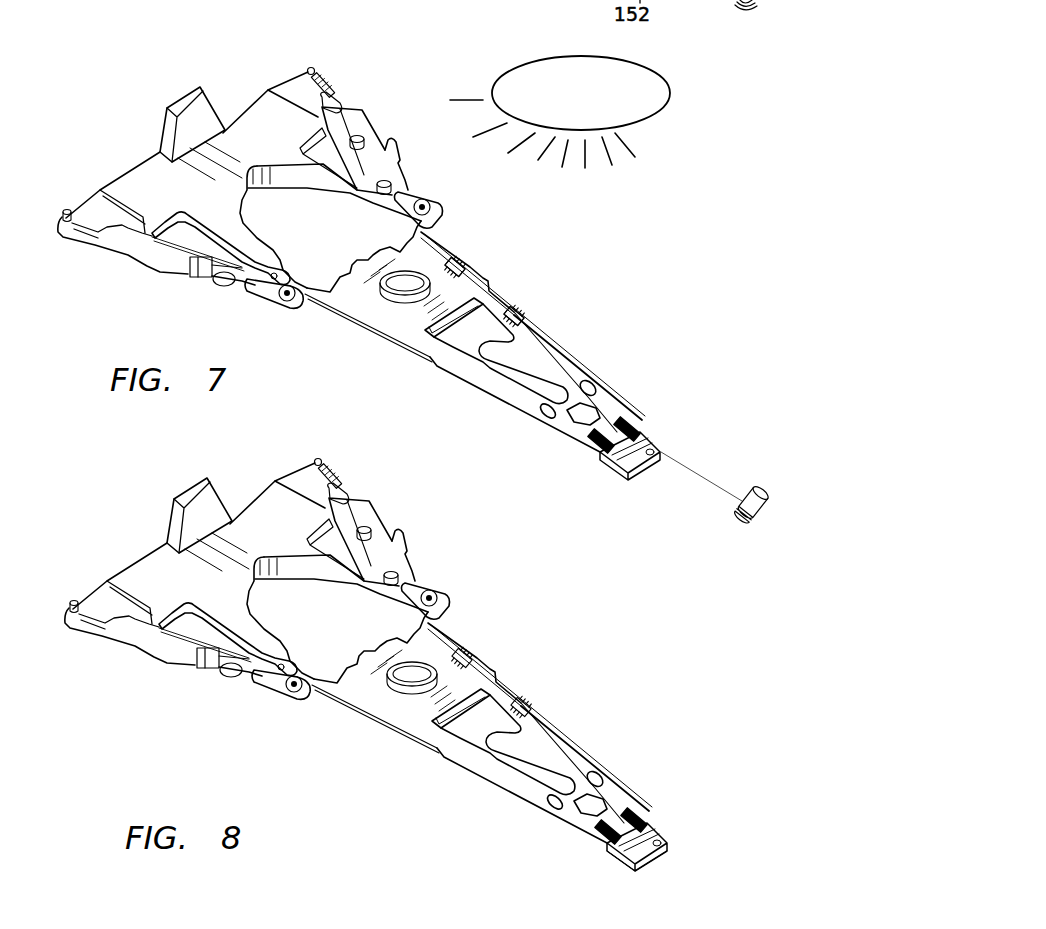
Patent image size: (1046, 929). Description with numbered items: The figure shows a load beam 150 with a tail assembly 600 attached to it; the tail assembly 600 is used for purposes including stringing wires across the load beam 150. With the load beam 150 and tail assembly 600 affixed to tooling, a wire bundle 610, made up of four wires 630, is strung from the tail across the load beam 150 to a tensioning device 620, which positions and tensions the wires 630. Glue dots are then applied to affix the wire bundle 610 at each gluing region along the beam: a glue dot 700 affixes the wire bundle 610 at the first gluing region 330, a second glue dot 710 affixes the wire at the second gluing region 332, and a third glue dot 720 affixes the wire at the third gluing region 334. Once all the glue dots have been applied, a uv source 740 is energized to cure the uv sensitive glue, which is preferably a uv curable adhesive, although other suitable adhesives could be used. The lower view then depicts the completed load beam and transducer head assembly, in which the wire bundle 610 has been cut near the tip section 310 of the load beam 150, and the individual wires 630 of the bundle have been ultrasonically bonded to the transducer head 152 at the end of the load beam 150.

In FIG. 7, the load beam 150 is at (382, 318).
In FIG. 8, the load beam 150 is at (438, 733).
In FIG. 7, the transducer head 152 is at (642, 470).
In FIG. 8, the transducer head 152 is at (674, 848).
In FIG. 8, the tip section 310 is at (578, 873).
In FIG. 7, the first gluing region 330 is at (643, 431).
In FIG. 8, the first gluing region 330 is at (621, 826).
In FIG. 7, the second gluing region 332 is at (523, 316).
In FIG. 7, the third gluing region 334 is at (470, 266).
In FIG. 7, the tail assembly 600 is at (285, 143).
In FIG. 8, the tail assembly 600 is at (246, 573).
In FIG. 7, the wire bundle 610 is at (388, 148).
In FIG. 8, the wire bundle 610 is at (393, 558).
In FIG. 7, the tensioning device 620 is at (762, 490).
In FIG. 7, the wires 630 is at (333, 62).
In FIG. 8, the wires 630 is at (356, 457).
In FIG. 7, the glue dot 700 is at (632, 420).
In FIG. 8, the glue dot 700 is at (567, 718).
In FIG. 7, the second glue dot 710 is at (515, 314).
In FIG. 8, the second glue dot 710 is at (577, 701).
In FIG. 7, the third glue dot 720 is at (457, 258).
In FIG. 8, the third glue dot 720 is at (505, 641).
In FIG. 7, the uv source 740 is at (672, 100).